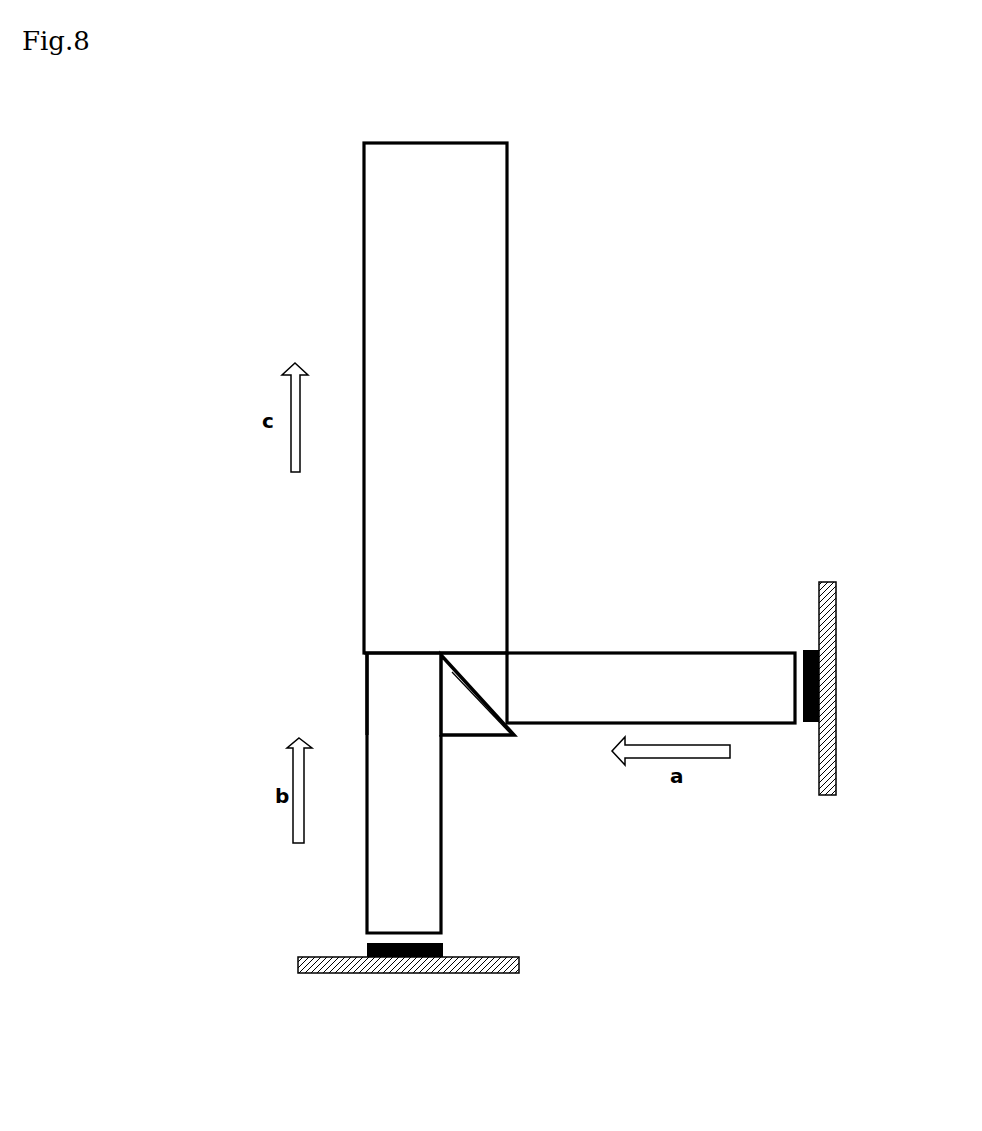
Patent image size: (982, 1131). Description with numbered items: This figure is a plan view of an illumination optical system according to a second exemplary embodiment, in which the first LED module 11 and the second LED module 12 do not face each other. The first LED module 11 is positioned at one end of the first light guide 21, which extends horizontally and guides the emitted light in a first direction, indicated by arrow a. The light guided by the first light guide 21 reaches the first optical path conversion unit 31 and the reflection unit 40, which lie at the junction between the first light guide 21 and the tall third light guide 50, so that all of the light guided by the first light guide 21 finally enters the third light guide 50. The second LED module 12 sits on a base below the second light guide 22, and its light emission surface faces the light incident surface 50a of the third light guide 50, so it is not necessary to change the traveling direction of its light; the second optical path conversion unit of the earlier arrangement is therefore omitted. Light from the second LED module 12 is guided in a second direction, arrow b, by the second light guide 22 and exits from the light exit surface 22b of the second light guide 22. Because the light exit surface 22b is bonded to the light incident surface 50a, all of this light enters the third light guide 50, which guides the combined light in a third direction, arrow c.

The first LED module 11 is at (830, 562).
The second LED module 12 is at (543, 953).
The first light guide 21 is at (671, 653).
The second light guide 22 is at (367, 880).
The light exit surface 22b is at (367, 670).
The first optical path conversion unit 31 is at (472, 668).
The reflection unit 40 is at (475, 723).
The third light guide 50 is at (507, 309).
The light incident surface 50a is at (410, 653).